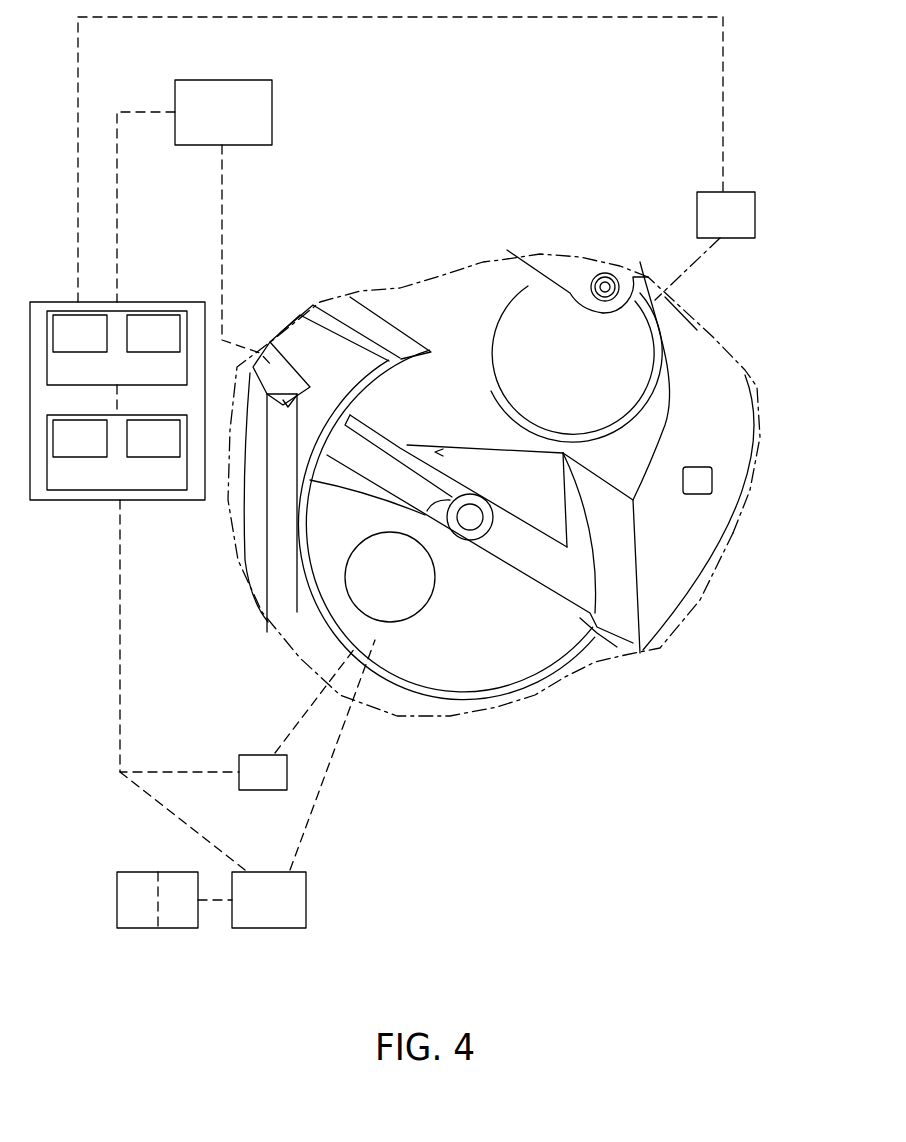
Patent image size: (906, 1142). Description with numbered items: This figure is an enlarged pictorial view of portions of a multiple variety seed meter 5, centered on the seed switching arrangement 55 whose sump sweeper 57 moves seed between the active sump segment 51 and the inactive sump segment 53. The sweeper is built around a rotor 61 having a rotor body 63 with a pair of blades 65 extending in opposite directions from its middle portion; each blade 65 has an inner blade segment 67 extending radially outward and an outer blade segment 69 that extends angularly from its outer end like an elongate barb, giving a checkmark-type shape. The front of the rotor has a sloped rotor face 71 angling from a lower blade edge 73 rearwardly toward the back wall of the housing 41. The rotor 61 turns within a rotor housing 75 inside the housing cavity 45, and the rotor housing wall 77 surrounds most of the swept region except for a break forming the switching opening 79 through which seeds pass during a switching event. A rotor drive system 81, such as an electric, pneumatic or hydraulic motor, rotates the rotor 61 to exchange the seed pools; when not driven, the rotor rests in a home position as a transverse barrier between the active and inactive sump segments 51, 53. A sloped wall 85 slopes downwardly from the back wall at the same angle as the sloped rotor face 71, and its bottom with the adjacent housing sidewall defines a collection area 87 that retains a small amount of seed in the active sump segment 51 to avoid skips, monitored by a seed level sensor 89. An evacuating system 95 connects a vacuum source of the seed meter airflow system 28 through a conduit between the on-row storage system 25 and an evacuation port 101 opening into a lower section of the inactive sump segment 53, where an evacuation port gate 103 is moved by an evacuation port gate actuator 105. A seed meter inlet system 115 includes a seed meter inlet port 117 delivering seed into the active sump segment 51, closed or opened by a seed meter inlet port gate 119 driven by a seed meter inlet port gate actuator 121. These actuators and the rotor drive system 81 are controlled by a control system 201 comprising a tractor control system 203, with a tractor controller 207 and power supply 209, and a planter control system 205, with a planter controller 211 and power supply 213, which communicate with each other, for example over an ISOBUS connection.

The seed meter 5 is at (527, 148).
The on-row storage system 25 is at (168, 928).
The seed meter airflow system 28 is at (278, 928).
The housing 41 is at (425, 270).
The housing cavity 45 is at (713, 337).
The active sump segment 51 is at (727, 420).
The inactive sump segment 53 is at (325, 533).
The seed switching arrangement 55 is at (765, 243).
The sump sweeper 57 is at (350, 390).
The rotor 61 is at (489, 425).
The rotor body 63 is at (506, 432).
The blade 65 is at (461, 440).
The inner blade segment 67 is at (509, 592).
The outer blade segment 69 is at (623, 567).
The sloped rotor face 71 is at (647, 540).
The lower blade edge 73 is at (548, 607).
The rotor housing 75 is at (270, 572).
The rotor housing wall 77 is at (297, 642).
The switching opening 79 is at (526, 434).
The rotor drive system 81 is at (225, 80).
The sloped wall 85 is at (667, 513).
The collection area 87 is at (630, 613).
The seed level sensor 89 is at (712, 480).
The evacuating system 95 is at (375, 735).
The evacuation port 101 is at (420, 627).
The evacuation port gate 103 is at (367, 587).
The evacuation port gate actuator 105 is at (265, 790).
The seed meter inlet system 115 is at (583, 252).
The seed meter inlet port 117 is at (630, 413).
The seed meter inlet port gate 119 is at (617, 317).
The seed meter inlet port gate actuator 121 is at (726, 215).
The control system 201 is at (160, 302).
The tractor control system 203 is at (117, 348).
The planter control system 205 is at (117, 452).
The tractor controller 207 is at (80, 333).
The power supply 209 is at (153, 333).
The planter controller 211 is at (80, 438).
The power supply 213 is at (153, 438).